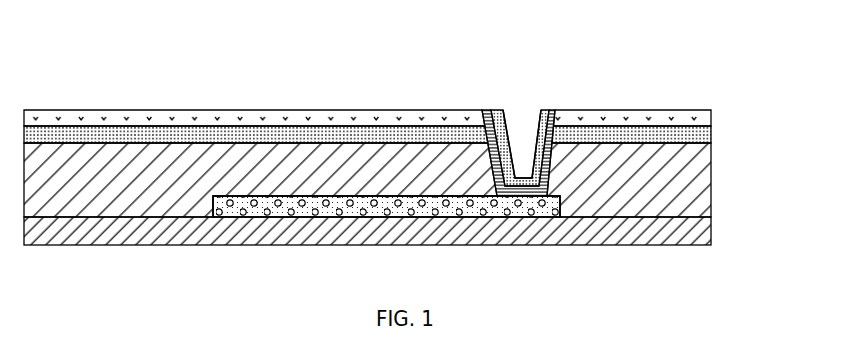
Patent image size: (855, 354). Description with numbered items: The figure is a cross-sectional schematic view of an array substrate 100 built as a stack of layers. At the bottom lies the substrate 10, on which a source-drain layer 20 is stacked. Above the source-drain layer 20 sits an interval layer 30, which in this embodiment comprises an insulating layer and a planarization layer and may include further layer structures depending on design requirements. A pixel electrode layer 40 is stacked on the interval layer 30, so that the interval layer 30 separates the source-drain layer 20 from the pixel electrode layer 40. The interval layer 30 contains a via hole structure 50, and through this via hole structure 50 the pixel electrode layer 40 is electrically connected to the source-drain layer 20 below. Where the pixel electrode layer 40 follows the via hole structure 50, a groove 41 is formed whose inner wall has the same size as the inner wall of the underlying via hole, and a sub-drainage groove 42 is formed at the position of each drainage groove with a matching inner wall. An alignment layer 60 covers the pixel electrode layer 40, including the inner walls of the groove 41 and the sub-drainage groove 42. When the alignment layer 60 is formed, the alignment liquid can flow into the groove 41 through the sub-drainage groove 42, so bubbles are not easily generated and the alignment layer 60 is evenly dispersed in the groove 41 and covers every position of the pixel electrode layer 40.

The array substrate 100 is at (394, 41).
The substrate 10 is at (705, 229).
The source-drain layer 20 is at (481, 207).
The interval layer 30 is at (705, 180).
The pixel electrode layer 40 is at (705, 135).
The groove 41 is at (502, 153).
The sub-drainage groove 42 is at (489, 118).
The via hole structure 50 is at (562, 194).
The alignment layer 60 is at (711, 113).